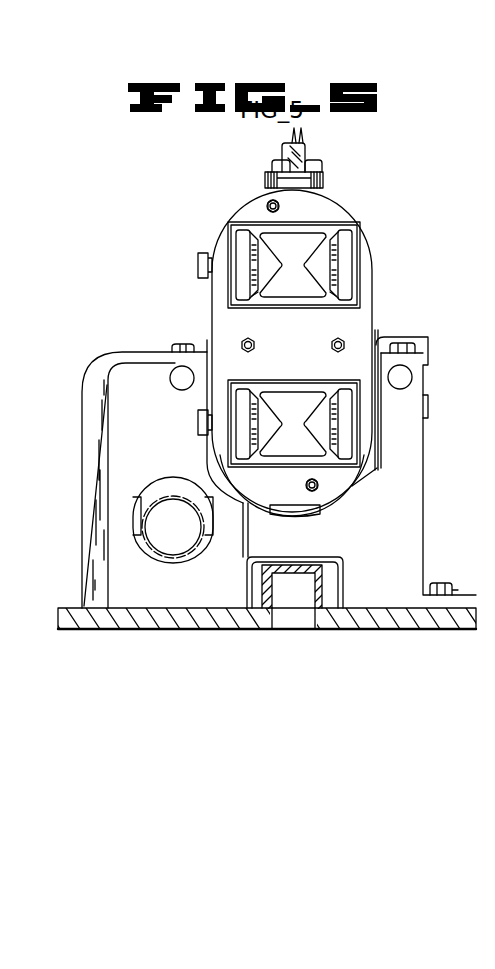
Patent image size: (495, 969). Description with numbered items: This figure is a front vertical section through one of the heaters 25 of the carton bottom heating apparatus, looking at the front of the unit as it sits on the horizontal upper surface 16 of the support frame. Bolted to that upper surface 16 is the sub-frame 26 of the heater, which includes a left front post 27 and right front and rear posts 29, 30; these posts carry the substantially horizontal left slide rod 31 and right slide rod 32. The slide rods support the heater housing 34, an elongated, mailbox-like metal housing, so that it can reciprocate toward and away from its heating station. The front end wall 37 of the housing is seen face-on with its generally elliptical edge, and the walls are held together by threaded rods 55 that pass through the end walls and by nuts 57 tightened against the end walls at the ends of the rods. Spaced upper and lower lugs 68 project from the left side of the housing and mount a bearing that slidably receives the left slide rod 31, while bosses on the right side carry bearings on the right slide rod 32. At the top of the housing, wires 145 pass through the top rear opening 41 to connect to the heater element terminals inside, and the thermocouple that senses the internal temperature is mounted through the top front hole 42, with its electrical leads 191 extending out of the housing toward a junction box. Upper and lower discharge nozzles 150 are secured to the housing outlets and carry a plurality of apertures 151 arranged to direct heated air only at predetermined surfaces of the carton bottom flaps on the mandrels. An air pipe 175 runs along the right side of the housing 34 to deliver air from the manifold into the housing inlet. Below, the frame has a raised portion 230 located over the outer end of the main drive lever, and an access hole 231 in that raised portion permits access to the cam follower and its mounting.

The horizontal upper surface 16 is at (72, 608).
The heater 25 is at (222, 214).
The sub-frame 26 is at (430, 524).
The left front post 27 is at (414, 444).
The right front post 29 is at (150, 416).
The right rear post 30 is at (108, 360).
The left slide rod 31 is at (405, 377).
The right slide rod 32 is at (178, 370).
The heater housing 34 is at (210, 304).
The front end wall 37 is at (300, 376).
The top rear opening 41 is at (320, 163).
The top front hole 42 is at (268, 172).
The threaded rod 55 is at (282, 206).
The nut 57 is at (265, 205).
The lug 68 is at (424, 340).
The wires 145 is at (290, 143).
The discharge nozzle 150 is at (347, 253).
The aperture 151 is at (333, 300).
The air pipe 175 is at (182, 560).
The electrical leads 191 is at (306, 161).
The raised portion 230 is at (320, 571).
The access hole 231 is at (318, 607).